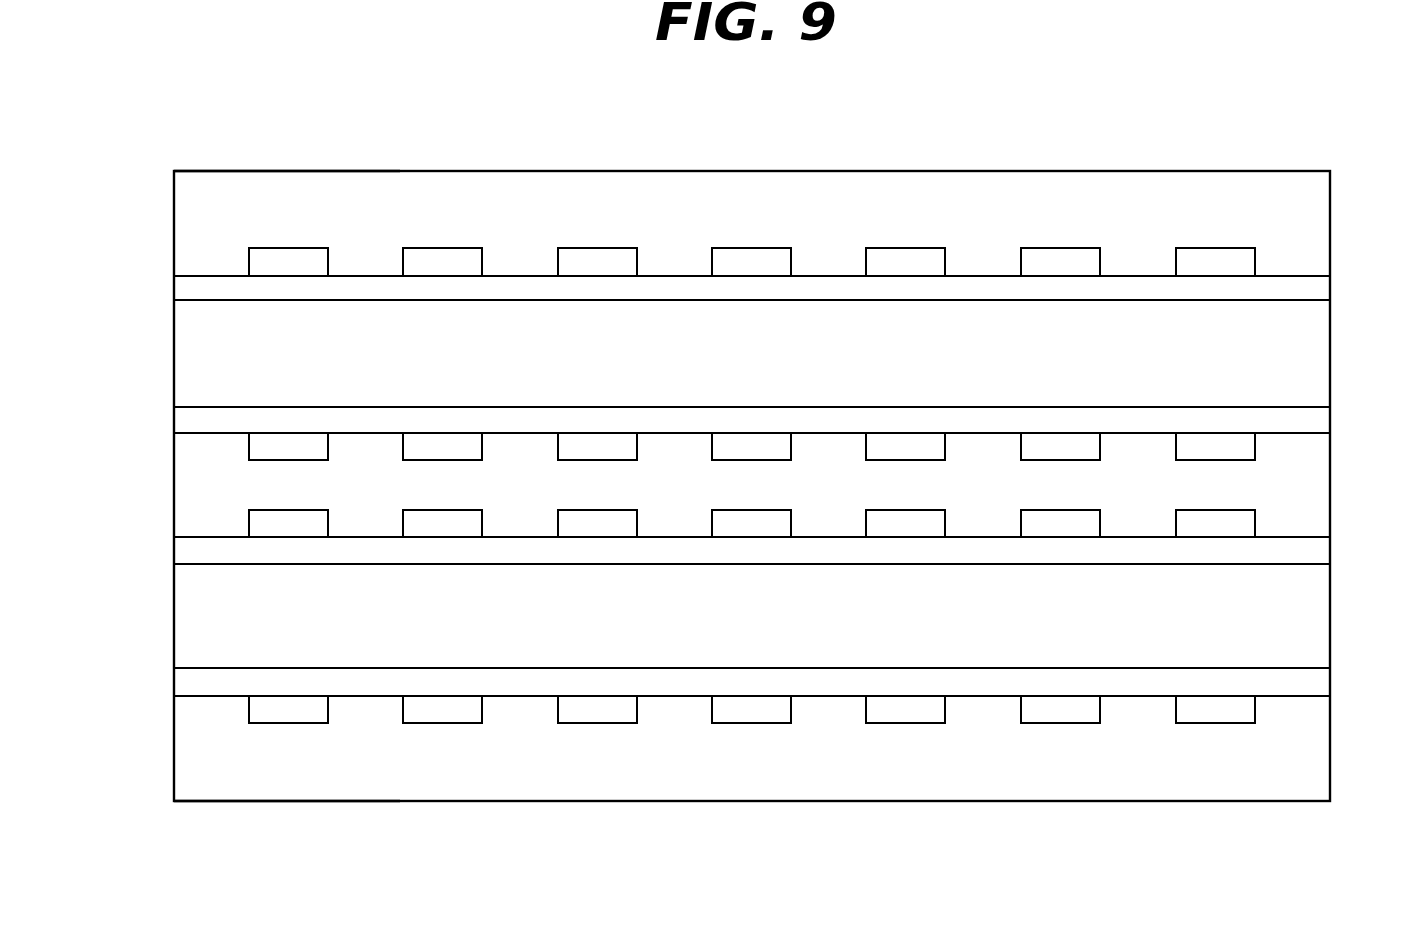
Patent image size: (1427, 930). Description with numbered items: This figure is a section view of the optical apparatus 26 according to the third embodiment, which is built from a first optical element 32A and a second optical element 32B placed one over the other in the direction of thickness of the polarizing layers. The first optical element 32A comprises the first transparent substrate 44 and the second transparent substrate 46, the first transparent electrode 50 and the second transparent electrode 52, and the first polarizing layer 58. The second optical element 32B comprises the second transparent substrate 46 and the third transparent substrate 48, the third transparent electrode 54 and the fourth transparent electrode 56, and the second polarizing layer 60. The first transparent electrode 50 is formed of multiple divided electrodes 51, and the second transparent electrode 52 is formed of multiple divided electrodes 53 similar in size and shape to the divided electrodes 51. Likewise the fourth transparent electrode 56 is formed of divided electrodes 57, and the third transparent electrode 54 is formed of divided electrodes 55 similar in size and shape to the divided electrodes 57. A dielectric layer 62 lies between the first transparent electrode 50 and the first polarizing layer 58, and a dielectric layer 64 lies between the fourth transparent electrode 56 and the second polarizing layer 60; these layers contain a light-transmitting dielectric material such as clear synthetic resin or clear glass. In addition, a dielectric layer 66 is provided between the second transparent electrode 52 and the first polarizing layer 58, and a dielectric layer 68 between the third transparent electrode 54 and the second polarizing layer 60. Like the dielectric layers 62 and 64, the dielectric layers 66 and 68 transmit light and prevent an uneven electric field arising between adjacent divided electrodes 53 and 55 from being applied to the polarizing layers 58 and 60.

The optical apparatus 26 is at (262, 114).
The first optical element 32A is at (153, 775).
The second optical element 32B is at (154, 194).
The first transparent substrate 44 is at (1312, 700).
The second transparent substrate 46 is at (1312, 462).
The third transparent substrate 48 is at (1314, 226).
The first transparent electrode 50 is at (1078, 735).
The divided electrodes 51 is at (1051, 712).
The second transparent electrode 52 is at (1078, 550).
The divided electrodes 53 is at (1052, 527).
The third transparent electrode 54 is at (1075, 421).
The divided electrodes 55 is at (1052, 442).
The fourth transparent electrode 56 is at (1078, 235).
The divided electrodes 57 is at (1050, 255).
The first polarizing layer 58 is at (1312, 579).
The second polarizing layer 60 is at (1312, 345).
The dielectric layer 62 is at (673, 688).
The dielectric layer 64 is at (678, 285).
The dielectric layer 66 is at (512, 553).
The dielectric layer 68 is at (522, 417).